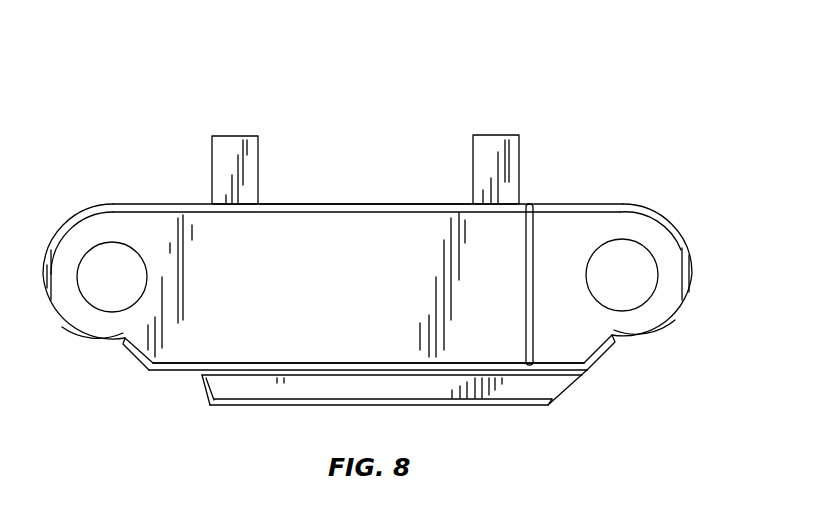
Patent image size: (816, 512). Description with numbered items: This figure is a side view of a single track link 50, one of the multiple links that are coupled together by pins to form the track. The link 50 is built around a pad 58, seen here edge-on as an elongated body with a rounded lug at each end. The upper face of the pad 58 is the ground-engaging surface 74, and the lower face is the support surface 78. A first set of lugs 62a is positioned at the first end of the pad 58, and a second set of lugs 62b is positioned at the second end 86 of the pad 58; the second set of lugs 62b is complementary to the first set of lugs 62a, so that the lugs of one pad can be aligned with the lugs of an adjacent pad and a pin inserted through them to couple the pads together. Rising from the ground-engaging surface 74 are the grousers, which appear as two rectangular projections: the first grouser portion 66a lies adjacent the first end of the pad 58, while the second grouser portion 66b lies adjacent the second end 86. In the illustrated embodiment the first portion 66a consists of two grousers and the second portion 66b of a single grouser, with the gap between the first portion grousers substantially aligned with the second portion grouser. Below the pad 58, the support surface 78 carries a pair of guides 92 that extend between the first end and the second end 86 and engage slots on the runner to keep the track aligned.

The link 50 is at (382, 236).
The pad 58 is at (312, 125).
The first set of lugs 62a is at (64, 238).
The second set of lugs 62b is at (652, 222).
The first grouser portion 66a is at (483, 155).
The second grouser portion 66b is at (228, 155).
The ground-engaging surface 74 is at (382, 204).
The support surface 78 is at (182, 372).
The second end 86 is at (541, 230).
The guides 92 is at (533, 390).